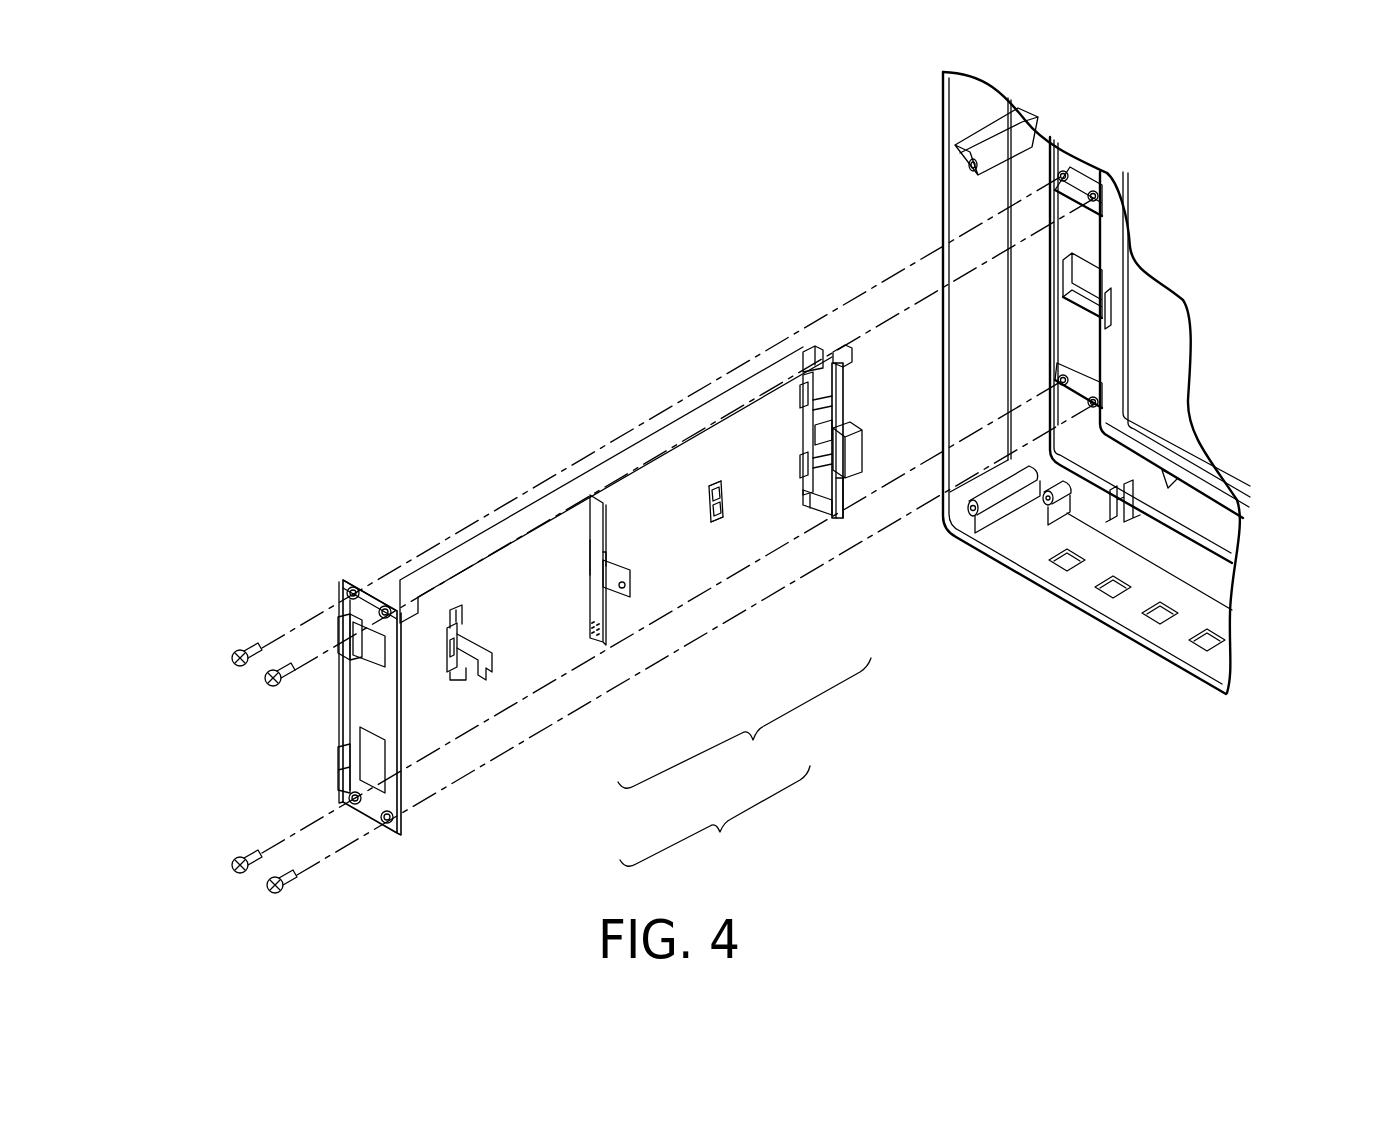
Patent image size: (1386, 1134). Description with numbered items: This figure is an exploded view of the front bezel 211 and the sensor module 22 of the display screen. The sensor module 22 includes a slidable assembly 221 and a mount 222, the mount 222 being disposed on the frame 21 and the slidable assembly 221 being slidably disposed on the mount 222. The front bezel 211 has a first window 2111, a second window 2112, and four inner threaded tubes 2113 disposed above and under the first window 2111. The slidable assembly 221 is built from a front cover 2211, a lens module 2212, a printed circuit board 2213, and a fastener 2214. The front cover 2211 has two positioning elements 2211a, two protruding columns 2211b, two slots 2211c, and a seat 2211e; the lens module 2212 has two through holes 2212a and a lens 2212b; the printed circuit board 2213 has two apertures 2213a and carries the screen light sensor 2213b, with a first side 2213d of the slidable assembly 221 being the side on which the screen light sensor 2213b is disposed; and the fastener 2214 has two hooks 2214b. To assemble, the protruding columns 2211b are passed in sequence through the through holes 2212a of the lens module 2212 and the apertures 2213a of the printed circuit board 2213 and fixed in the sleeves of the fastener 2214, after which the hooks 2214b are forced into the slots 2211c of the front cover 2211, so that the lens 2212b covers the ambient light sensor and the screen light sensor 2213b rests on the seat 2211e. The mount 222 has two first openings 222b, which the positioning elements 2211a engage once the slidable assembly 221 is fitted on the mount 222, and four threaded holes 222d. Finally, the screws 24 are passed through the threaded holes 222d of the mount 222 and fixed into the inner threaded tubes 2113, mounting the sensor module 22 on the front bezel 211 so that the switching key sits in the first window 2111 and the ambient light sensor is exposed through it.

The frame 21 is at (1134, 443).
The front bezel 211 is at (1188, 350).
The first window 2111 is at (1087, 282).
The second window 2112 is at (1110, 303).
The inner threaded tubes 2113 is at (1133, 141).
The sensor module 22 is at (560, 603).
The slidable assembly 221 is at (674, 551).
The front cover 2211 is at (785, 490).
The positioning elements 2211a is at (805, 375).
The protruding columns 2211b is at (855, 433).
The slots 2211c is at (800, 445).
The seat 2211e is at (843, 478).
The lens module 2212 is at (675, 549).
The through holes 2212a is at (707, 495).
The lens 2212b is at (760, 521).
The printed circuit board 2213 is at (595, 586).
The apertures 2213a is at (590, 557).
The screen light sensor 2213b is at (630, 581).
The first side 2213d is at (606, 562).
The fastener 2214 is at (532, 681).
The hooks 2214b is at (457, 677).
The mount 222 is at (454, 703).
The first openings 222b is at (343, 731).
The threaded holes 222d is at (343, 583).
The screws 24 is at (233, 655).